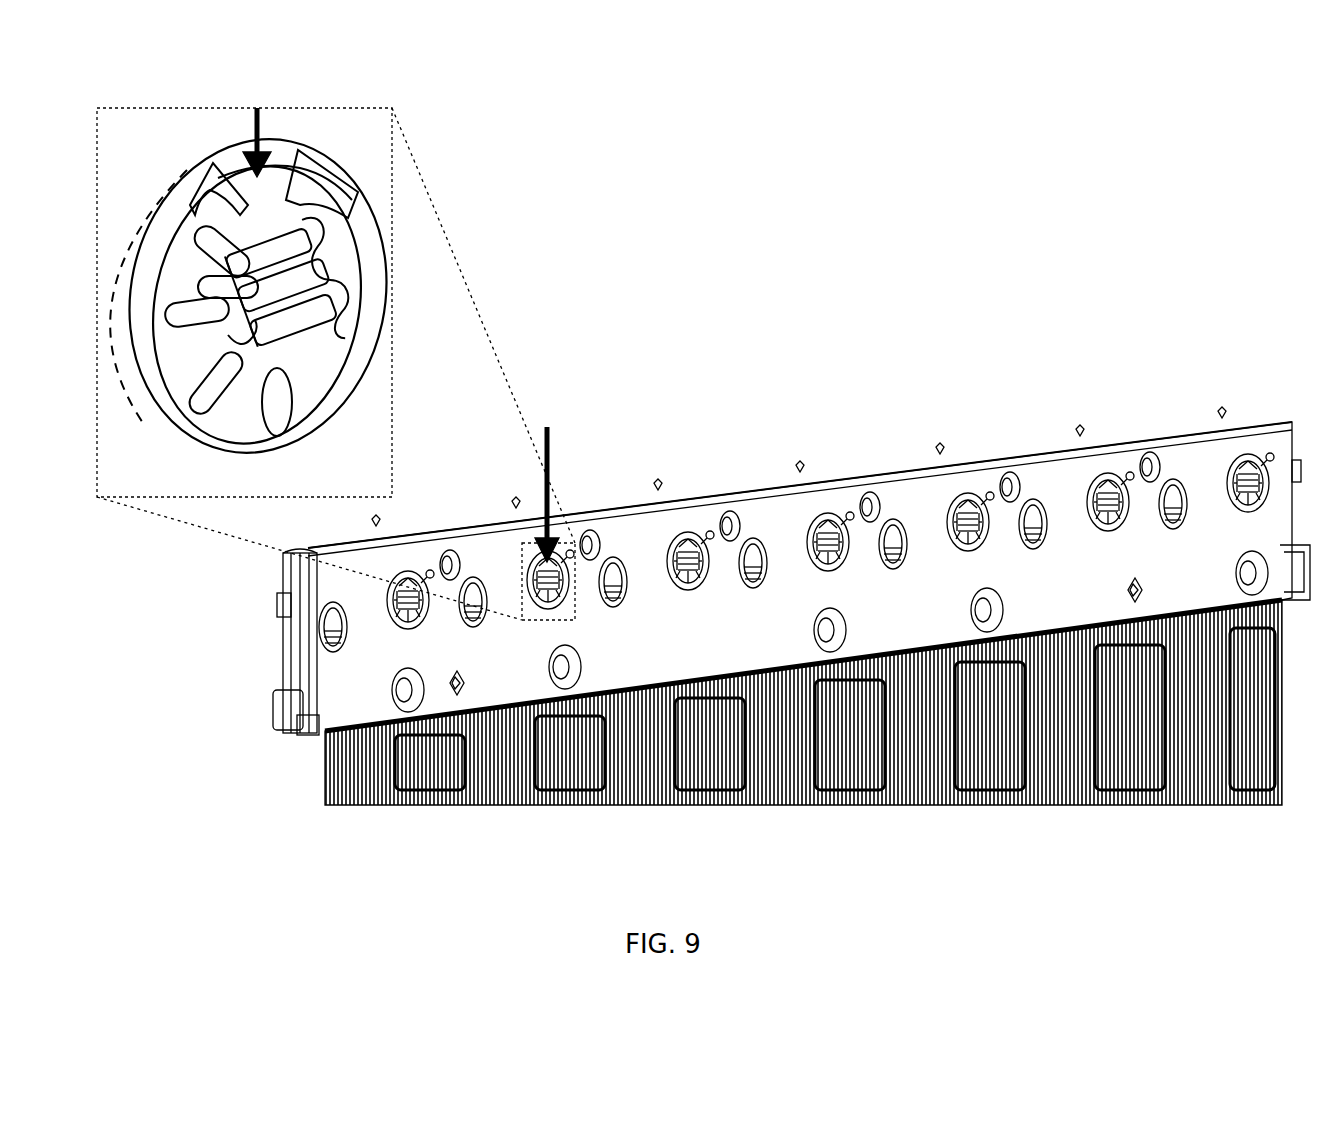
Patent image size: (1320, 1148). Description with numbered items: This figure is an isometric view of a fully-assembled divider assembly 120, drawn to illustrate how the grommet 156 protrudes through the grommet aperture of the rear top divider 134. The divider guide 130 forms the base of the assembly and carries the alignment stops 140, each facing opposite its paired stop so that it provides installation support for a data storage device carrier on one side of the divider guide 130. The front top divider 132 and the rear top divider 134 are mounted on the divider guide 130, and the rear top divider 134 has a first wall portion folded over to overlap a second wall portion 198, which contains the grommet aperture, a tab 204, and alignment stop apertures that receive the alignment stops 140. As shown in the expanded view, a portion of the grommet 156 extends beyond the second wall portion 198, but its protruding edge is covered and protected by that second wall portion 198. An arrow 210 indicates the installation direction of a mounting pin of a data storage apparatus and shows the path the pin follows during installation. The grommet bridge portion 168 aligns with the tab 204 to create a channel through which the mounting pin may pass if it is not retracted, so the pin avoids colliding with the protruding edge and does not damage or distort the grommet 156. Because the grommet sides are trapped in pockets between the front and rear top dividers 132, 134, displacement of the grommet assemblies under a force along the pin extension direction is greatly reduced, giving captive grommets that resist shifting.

The divider assembly 120 is at (750, 368).
The divider guide 130 is at (325, 765).
The front top divider 132 is at (332, 548).
The rear top divider 134 is at (688, 538).
The alignment stop 140 is at (1033, 498).
The first grommet 156 is at (358, 272).
The grommet bridge portion 168 is at (248, 192).
The second wall portion 198 is at (367, 135).
The tab 204 is at (282, 165).
The arrow 210 is at (255, 138).